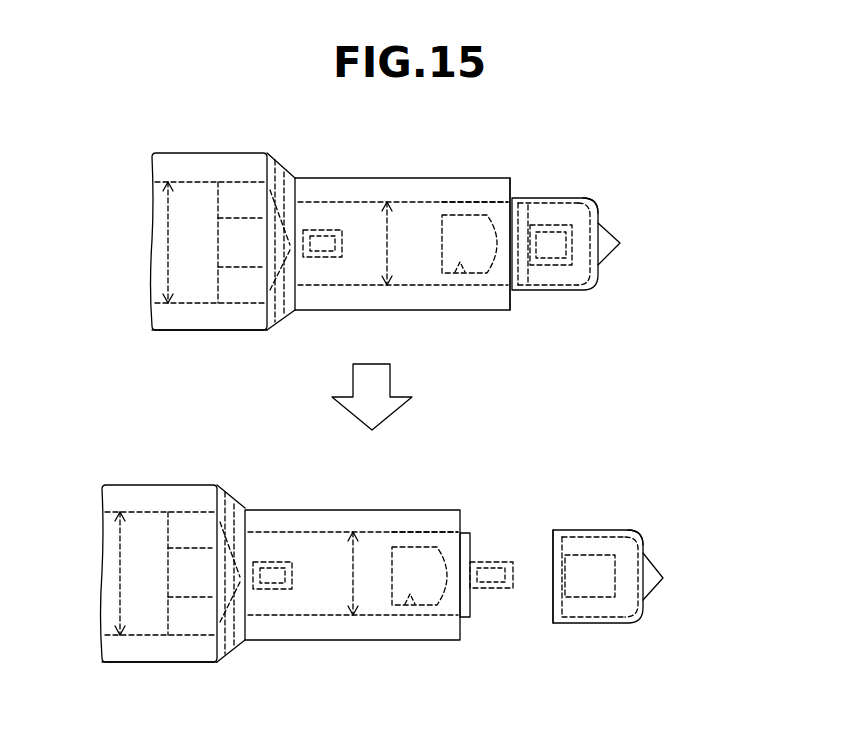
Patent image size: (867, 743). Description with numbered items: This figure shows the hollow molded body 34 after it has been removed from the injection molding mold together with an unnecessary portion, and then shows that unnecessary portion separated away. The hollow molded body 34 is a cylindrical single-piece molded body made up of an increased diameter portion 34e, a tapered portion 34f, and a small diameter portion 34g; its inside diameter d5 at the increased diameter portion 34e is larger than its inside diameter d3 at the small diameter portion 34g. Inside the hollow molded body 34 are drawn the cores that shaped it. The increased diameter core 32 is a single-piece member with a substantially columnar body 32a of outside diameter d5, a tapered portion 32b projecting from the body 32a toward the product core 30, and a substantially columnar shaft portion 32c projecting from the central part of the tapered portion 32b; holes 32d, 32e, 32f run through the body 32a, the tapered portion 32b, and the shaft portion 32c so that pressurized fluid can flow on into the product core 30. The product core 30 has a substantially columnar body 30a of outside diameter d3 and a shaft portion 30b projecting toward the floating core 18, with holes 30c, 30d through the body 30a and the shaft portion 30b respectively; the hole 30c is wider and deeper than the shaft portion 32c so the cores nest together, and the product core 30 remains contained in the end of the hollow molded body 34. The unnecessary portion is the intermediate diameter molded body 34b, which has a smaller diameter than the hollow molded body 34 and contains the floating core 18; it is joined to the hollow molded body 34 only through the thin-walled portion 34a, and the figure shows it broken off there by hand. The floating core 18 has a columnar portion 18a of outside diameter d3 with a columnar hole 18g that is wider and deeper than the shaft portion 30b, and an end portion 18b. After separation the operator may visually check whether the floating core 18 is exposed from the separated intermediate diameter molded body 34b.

The floating core 18 is at (609, 236).
The columnar portion 18a is at (541, 292).
The light source unit rounded portion 18b is at (586, 292).
The columnar hole 18g is at (519, 292).
The product core 30 is at (443, 245).
The body 30a is at (480, 203).
The shaft portion 30b is at (543, 207).
The hole 30c is at (472, 278).
The hole 30d is at (565, 285).
The increased diameter core 32 is at (216, 264).
The body 32a is at (238, 300).
The tapered portion 32b is at (284, 312).
The shaft portion 32c is at (330, 233).
The hole 32d is at (233, 232).
The hole 32e is at (262, 222).
The hole 32f is at (322, 230).
The hollow molded body 34 is at (348, 176).
The thin-walled portion 34a is at (518, 192).
The intermediate diameter molded body 34b is at (566, 200).
The increased diameter portion 34e is at (198, 172).
The tapered portion 34f is at (283, 185).
The small diameter portion 34g is at (415, 223).
The outside diameter d3 is at (377, 248).
The outside diameter d5 is at (150, 253).